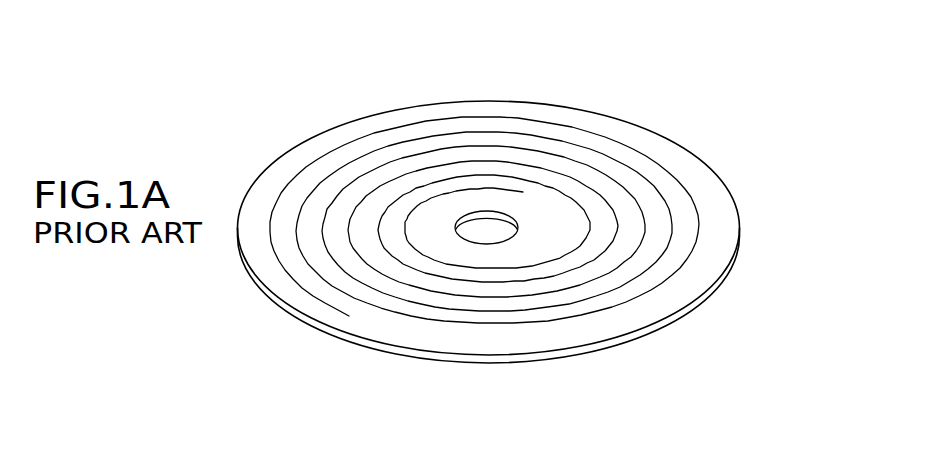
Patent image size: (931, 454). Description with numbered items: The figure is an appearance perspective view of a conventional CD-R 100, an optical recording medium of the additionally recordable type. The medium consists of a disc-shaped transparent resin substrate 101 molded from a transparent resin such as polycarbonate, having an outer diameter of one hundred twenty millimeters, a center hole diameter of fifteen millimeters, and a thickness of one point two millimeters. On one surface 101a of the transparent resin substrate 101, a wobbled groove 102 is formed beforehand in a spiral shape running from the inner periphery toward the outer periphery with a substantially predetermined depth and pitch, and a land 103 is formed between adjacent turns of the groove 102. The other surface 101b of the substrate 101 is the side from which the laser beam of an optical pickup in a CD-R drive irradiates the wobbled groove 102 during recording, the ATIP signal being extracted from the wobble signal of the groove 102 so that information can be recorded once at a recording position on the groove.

The CD-R 100 is at (312, 81).
The transparent resin substrate 101 is at (603, 107).
The one surface 101a is at (708, 177).
The another surface 101b is at (590, 353).
The wobbled groove 102 is at (618, 303).
The land 103 is at (685, 233).